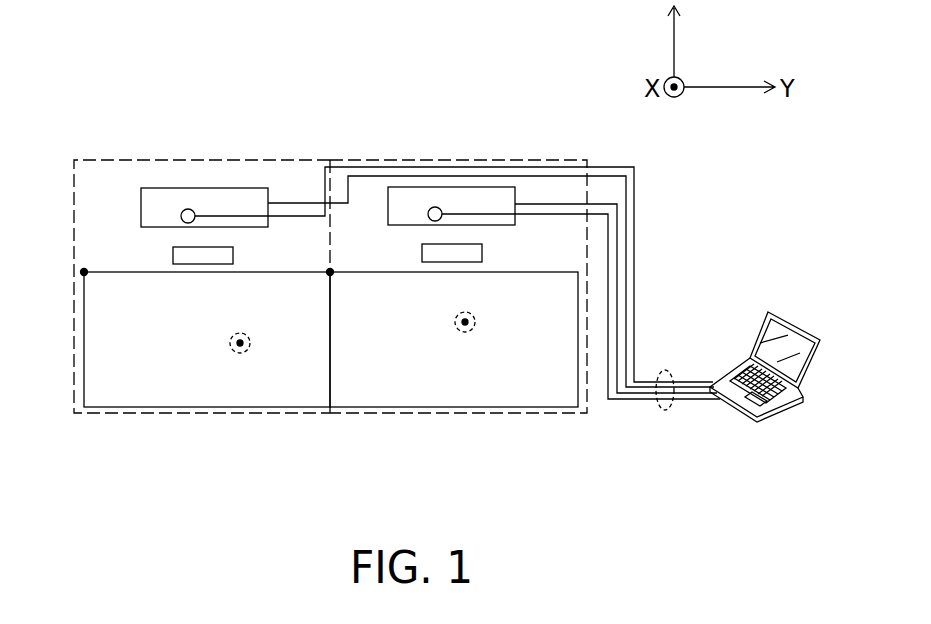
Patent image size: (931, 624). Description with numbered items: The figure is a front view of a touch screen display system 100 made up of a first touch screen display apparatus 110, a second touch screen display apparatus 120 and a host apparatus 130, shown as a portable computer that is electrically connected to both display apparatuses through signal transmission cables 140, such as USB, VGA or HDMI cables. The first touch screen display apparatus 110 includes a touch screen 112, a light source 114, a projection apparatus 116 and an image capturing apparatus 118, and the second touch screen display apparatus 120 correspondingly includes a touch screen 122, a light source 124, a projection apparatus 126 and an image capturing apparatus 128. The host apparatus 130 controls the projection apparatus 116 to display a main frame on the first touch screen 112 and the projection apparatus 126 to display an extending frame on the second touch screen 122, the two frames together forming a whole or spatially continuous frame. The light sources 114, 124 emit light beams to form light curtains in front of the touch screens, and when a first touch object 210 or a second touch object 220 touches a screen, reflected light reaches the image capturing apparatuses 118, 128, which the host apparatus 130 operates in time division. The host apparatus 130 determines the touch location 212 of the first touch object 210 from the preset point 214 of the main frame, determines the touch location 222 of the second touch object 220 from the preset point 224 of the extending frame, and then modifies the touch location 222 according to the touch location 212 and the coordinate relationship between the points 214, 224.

The touch screen display system 100 is at (819, 502).
The first touch screen display apparatus 110 is at (112, 160).
The first touch screen 112 is at (91, 360).
The light source 114 is at (173, 255).
The projection apparatus 116 is at (232, 188).
The image capturing apparatus 118 is at (181, 216).
The second touch screen display apparatus 120 is at (541, 160).
The second touch screen 122 is at (430, 415).
The light source 124 is at (422, 253).
The projection apparatus 126 is at (490, 187).
The image capturing apparatus 128 is at (428, 214).
The host apparatus 130 is at (798, 327).
The signal transmission cables 140 is at (665, 410).
The first touch object 210 is at (231, 350).
The touch location 212 is at (250, 343).
The point 214 is at (84, 272).
The second touch object 220 is at (457, 330).
The touch location 222 is at (475, 321).
The point 224 is at (329, 271).